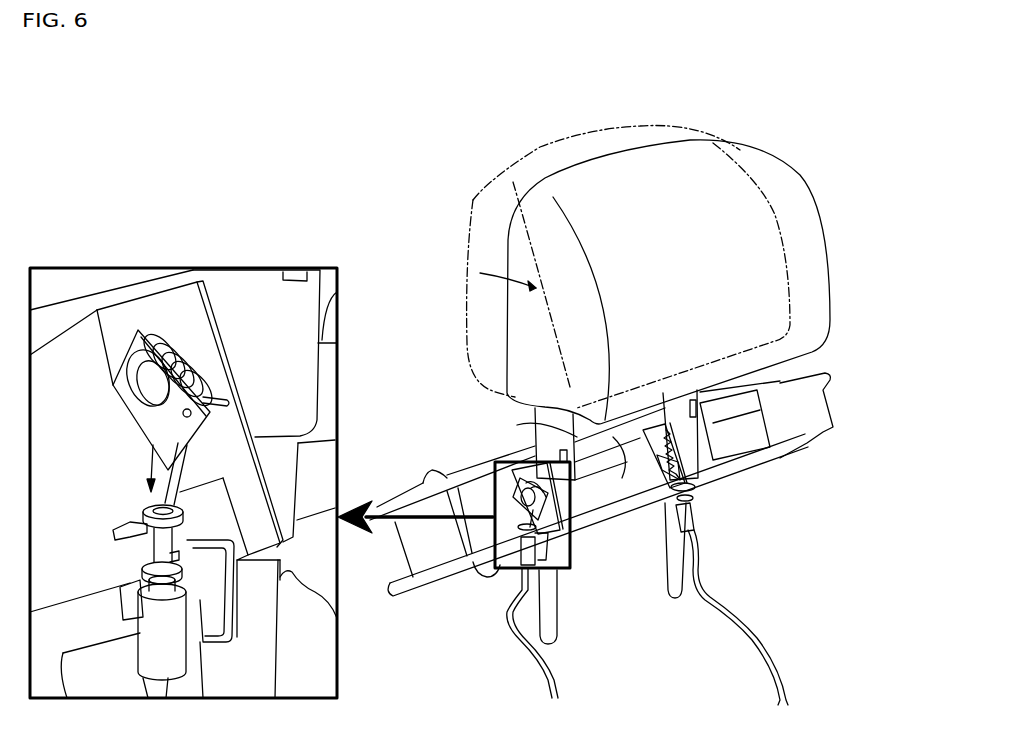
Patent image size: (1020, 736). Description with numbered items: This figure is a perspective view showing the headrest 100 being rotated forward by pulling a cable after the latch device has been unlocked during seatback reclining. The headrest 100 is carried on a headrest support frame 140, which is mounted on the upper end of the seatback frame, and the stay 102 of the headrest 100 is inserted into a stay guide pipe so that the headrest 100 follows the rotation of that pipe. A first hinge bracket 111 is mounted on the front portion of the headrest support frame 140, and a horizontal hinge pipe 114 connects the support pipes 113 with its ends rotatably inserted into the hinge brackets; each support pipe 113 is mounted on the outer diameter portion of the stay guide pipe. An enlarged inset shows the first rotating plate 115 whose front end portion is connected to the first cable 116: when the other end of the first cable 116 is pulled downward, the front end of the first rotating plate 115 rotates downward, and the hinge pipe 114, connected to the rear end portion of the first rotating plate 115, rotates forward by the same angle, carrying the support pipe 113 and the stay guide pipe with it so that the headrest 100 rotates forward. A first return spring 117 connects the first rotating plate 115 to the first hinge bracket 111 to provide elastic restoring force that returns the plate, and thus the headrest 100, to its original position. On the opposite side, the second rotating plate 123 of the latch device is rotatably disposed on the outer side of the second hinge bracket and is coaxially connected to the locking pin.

The headrest 100 is at (743, 147).
The stay 102 is at (263, 637).
The first hinge bracket 111 is at (118, 312).
The support pipe 113 is at (253, 283).
The hinge pipe 114 is at (327, 300).
The first rotating plate 115 is at (120, 383).
The first cable 116 is at (163, 503).
The first return spring 117 is at (173, 333).
The second rotating plate 123 is at (652, 477).
The headrest support frame 140 is at (810, 415).